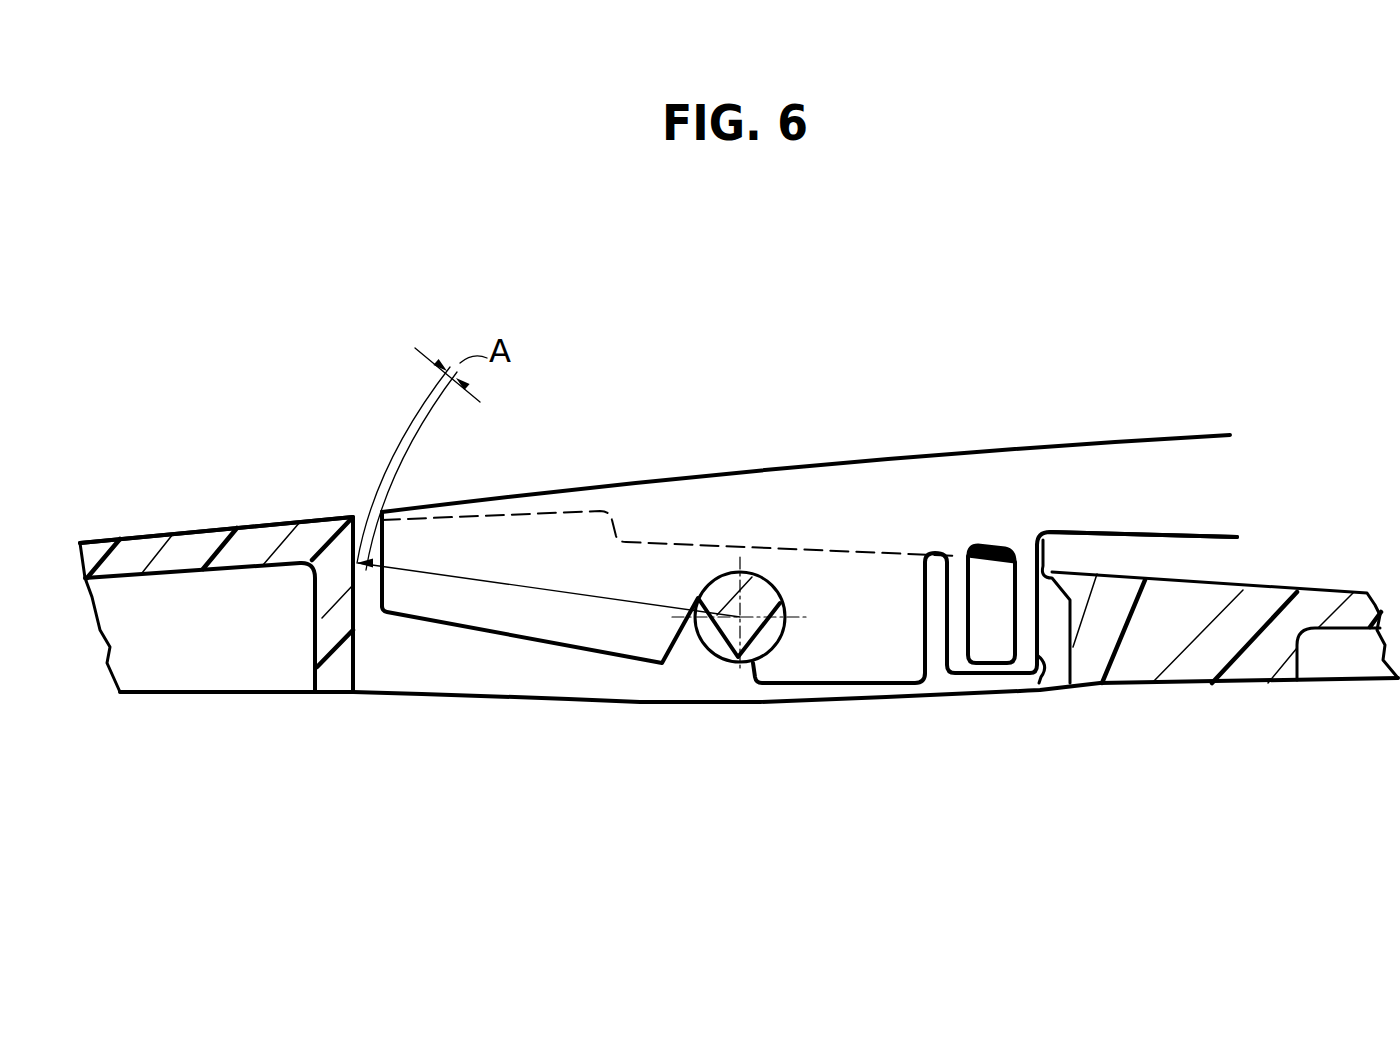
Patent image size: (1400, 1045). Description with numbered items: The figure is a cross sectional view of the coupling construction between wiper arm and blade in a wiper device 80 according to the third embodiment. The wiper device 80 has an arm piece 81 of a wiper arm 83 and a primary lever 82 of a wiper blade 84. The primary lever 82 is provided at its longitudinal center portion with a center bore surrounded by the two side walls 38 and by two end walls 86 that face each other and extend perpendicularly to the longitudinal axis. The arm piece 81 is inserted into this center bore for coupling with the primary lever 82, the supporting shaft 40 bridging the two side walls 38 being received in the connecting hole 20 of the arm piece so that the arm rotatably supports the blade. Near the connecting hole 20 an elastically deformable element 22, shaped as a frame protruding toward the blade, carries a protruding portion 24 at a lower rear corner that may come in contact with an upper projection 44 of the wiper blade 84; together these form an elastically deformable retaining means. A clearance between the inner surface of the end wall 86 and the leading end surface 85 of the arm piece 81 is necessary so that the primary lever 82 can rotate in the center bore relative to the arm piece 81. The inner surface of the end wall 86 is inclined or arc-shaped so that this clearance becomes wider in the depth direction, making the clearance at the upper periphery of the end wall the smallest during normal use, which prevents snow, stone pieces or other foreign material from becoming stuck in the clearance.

The connecting hole 20 is at (750, 577).
The elastically deformable element 22 is at (983, 677).
The protruding portion 24 is at (1033, 667).
The side walls 38 is at (468, 666).
The supporting shaft 40 is at (752, 650).
The upper projection 44 is at (1052, 570).
The wiper device 80 is at (780, 350).
The arm piece 81 is at (1110, 432).
The wiper arm 83 is at (1143, 534).
The primary lever 82 is at (204, 541).
The wiper blade 84 is at (216, 530).
The leading end surface 85 is at (373, 593).
The end walls 86 is at (357, 597).